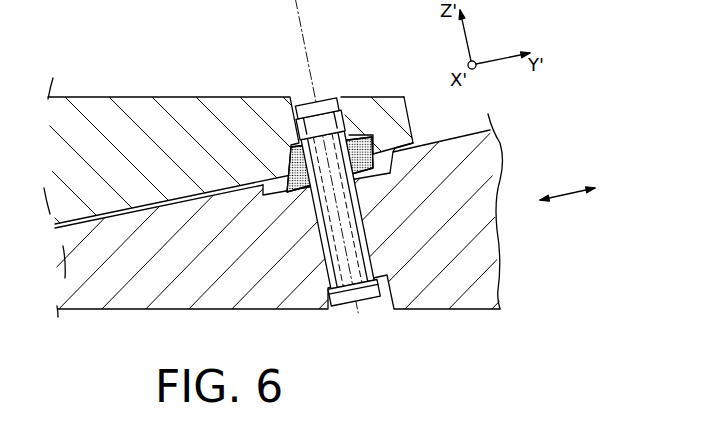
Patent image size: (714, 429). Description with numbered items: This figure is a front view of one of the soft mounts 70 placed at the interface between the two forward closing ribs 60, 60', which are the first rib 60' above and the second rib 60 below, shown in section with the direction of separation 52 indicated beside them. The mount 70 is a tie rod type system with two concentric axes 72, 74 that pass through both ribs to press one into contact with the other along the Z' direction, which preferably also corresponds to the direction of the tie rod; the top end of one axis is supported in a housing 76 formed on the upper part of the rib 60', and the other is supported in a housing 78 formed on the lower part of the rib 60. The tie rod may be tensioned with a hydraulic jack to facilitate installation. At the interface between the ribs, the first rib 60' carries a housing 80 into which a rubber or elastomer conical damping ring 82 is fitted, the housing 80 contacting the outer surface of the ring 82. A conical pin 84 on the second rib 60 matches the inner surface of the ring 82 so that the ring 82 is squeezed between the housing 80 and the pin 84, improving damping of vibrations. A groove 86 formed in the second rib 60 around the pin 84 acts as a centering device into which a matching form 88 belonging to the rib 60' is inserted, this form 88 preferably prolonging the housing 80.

The separation direction 52 is at (567, 194).
The second rib 60 is at (343, 230).
The first rib 60' is at (252, 134).
The soft mount 70 is at (329, 84).
The axis of the tie rod 72 is at (324, 244).
The axis of the tie rod 74 is at (369, 243).
The housing 76 is at (297, 101).
The housing 78 is at (376, 306).
The housing 80 is at (291, 147).
The conical damping ring 82 is at (412, 124).
The conical pin 84 is at (350, 178).
The groove 86 is at (405, 207).
The matching form 88 is at (262, 194).